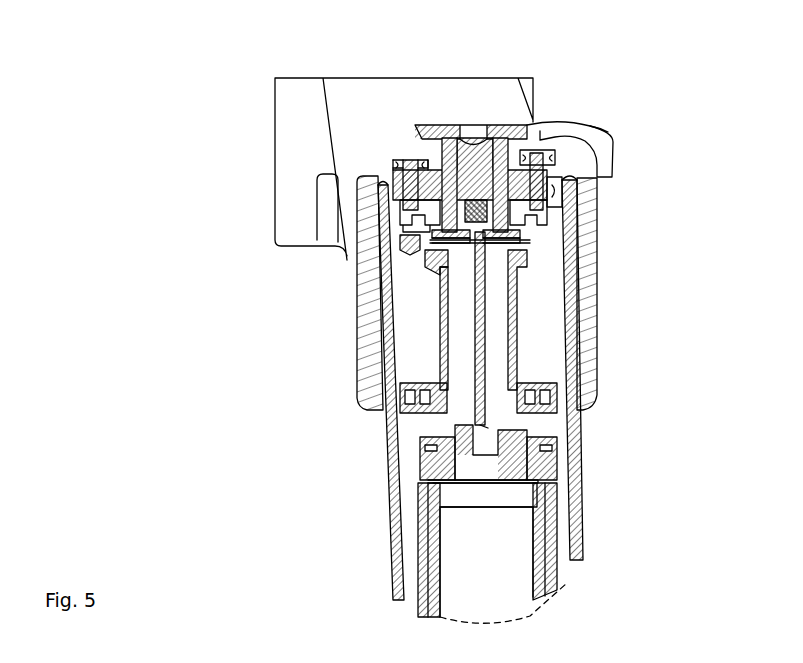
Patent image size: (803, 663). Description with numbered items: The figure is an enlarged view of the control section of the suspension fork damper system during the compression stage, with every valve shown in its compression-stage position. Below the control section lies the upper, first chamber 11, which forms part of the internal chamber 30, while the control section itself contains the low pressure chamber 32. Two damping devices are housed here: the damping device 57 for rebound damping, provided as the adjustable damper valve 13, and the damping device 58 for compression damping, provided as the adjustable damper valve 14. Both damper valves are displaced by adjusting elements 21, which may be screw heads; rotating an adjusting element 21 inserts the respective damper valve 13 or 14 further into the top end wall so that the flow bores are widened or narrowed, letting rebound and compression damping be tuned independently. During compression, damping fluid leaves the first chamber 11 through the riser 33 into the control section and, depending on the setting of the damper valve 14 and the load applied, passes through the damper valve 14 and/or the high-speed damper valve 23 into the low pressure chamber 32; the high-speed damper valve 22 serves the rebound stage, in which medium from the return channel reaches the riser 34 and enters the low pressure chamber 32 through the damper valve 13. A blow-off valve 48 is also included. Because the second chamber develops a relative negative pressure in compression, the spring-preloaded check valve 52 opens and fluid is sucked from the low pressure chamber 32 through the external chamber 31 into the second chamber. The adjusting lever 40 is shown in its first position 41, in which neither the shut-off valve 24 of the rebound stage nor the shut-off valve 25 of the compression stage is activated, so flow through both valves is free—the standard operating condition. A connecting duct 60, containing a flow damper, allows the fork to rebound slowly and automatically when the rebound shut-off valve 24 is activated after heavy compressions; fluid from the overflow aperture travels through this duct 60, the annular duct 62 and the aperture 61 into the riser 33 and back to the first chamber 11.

The first chamber 11 is at (467, 572).
The adjustable damper valve 13 is at (543, 148).
The adjustable damper valve 14 is at (395, 152).
The adjusting element 21 is at (383, 157).
The high-speed damper valve 22 is at (550, 240).
The high-speed damper valve 23 is at (422, 246).
The shut-off valve 24 is at (472, 127).
The shut-off valve 25 is at (408, 155).
The internal chamber 30 is at (458, 598).
The external chamber 31 is at (565, 547).
The low pressure chamber 32 is at (542, 312).
The riser 33 is at (463, 347).
The riser 34 is at (493, 357).
The adjusting lever 40 is at (595, 137).
The first position 41 is at (640, 133).
The blow-off valve 48 is at (420, 268).
The check valve 52 is at (547, 423).
The damping device 57 is at (545, 155).
The damping device 58 is at (390, 163).
The connecting duct 60 is at (428, 533).
The aperture 61 is at (420, 465).
The annular duct 62 is at (430, 552).